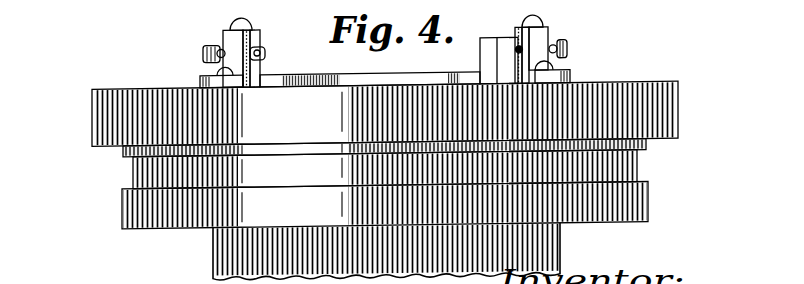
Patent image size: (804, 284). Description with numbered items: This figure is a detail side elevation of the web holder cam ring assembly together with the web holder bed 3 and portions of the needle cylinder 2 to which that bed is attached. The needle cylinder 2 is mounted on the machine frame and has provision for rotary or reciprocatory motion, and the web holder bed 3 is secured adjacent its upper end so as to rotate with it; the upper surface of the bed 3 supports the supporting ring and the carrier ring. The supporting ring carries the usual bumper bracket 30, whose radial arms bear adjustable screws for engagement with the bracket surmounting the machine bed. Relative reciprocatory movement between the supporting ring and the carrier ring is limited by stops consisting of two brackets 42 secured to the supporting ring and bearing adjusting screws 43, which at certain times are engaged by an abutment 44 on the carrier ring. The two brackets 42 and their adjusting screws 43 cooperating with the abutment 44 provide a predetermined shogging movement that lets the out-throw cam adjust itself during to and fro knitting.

The needle cylinder 2 is at (227, 256).
The web holder bed 3 is at (132, 204).
The bumper bracket 30 is at (317, 72).
The brackets 42 is at (205, 71).
The adjusting screws 43 is at (262, 49).
The abutment 44 is at (490, 48).